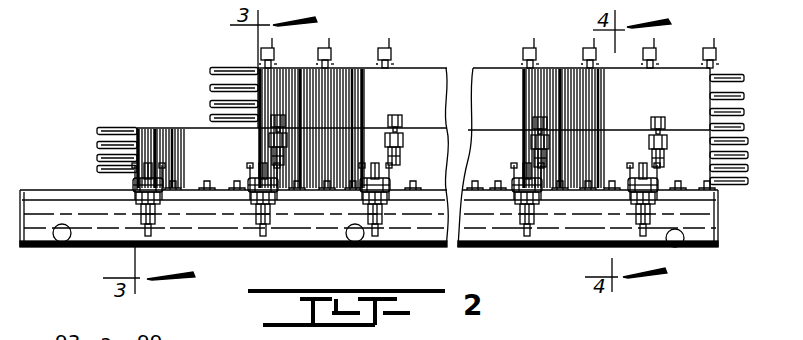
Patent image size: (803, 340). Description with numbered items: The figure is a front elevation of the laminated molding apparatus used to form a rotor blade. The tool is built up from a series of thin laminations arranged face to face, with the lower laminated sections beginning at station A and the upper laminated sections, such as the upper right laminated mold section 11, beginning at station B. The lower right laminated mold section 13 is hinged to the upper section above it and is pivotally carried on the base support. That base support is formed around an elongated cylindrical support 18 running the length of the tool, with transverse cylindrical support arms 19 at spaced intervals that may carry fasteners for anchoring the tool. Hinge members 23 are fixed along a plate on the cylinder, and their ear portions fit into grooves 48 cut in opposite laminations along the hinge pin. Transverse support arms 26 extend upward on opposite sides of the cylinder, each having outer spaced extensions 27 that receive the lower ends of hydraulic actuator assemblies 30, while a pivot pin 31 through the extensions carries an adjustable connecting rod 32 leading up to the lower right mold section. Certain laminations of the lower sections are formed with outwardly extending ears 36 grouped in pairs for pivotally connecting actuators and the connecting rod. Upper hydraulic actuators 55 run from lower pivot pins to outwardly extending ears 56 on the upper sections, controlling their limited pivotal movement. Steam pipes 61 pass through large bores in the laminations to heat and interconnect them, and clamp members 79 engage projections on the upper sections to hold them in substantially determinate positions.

The upper right laminated mold section 11 is at (406, 68).
The lower right laminated mold section 13 is at (154, 128).
The station A is at (133, 123).
The station B is at (253, 63).
The steam pipes 61 is at (210, 73).
The clamp members 79 is at (383, 52).
The outwardly extending ears 56 is at (402, 120).
The upper hydraulic actuators 55 is at (268, 138).
The outwardly extending ears 36 is at (403, 180).
The grooves 48 is at (188, 185).
The hydraulic actuator assemblies 30 is at (143, 207).
The pivot pin 31 is at (262, 214).
The transverse support arms 26 is at (266, 240).
The outer spaced extensions 27 is at (282, 242).
The transverse cylindrical support arms 19 is at (58, 241).
The elongated cylindrical support 18 is at (712, 238).
The hinge members 23 is at (576, 190).
The adjustable connecting rod 32 is at (520, 188).